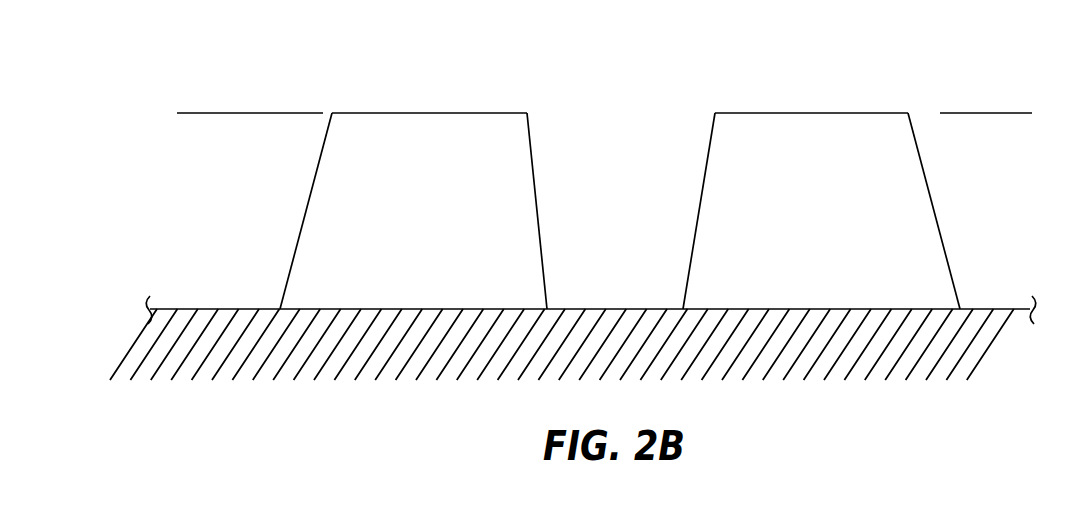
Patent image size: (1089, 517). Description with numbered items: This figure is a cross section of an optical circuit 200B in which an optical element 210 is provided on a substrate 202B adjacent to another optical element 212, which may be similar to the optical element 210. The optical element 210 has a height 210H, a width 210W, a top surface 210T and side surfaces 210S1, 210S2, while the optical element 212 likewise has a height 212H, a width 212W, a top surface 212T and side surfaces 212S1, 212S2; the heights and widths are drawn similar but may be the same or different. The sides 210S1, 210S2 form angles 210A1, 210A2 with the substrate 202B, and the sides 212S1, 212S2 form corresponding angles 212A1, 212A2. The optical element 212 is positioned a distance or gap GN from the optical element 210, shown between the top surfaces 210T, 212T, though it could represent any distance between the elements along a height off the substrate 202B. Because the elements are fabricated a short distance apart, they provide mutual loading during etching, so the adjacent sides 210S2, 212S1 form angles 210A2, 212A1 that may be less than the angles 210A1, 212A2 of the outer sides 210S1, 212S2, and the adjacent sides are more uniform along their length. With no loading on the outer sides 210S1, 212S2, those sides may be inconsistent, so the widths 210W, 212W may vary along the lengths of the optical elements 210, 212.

The optical circuit 200B is at (252, 36).
The substrate 202B is at (573, 338).
The optical element 210 is at (424, 197).
The top surface 210T is at (345, 113).
The width 210W is at (527, 83).
The height 210H is at (203, 309).
The side surface 210S1 is at (314, 180).
The side surface 210S2 is at (531, 152).
The angle 210A1 is at (235, 309).
The angle 210A2 is at (606, 309).
The optical element 212 is at (815, 197).
The top surface 212T is at (900, 113).
The width 212W is at (908, 83).
The height 212H is at (1017, 309).
The side surface 212S1 is at (704, 180).
The side surface 212S2 is at (923, 170).
The angle 212A1 is at (630, 309).
The angle 212A2 is at (1008, 309).
The gap GN is at (715, 48).